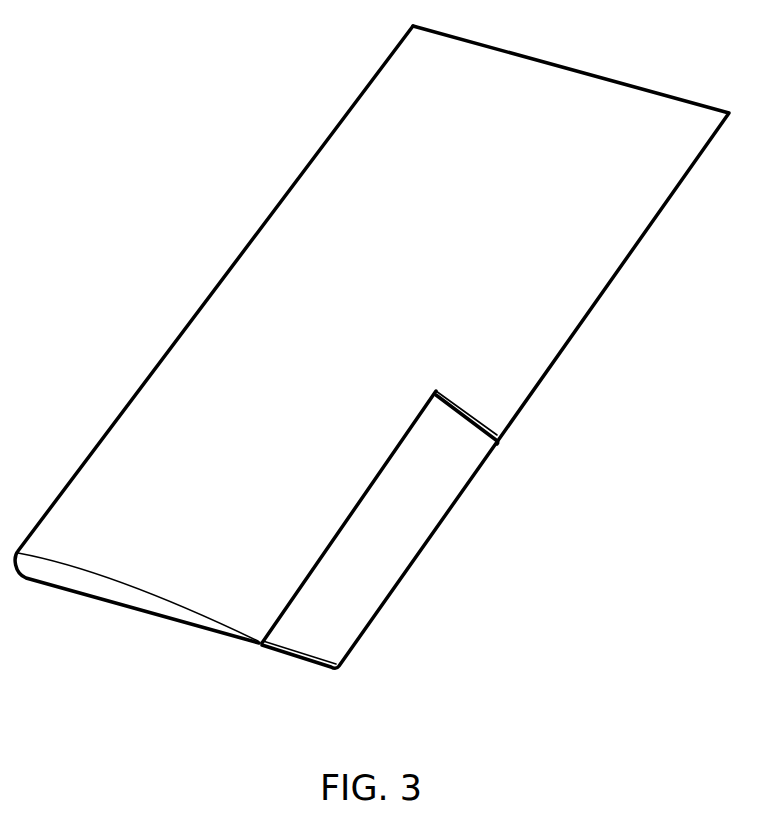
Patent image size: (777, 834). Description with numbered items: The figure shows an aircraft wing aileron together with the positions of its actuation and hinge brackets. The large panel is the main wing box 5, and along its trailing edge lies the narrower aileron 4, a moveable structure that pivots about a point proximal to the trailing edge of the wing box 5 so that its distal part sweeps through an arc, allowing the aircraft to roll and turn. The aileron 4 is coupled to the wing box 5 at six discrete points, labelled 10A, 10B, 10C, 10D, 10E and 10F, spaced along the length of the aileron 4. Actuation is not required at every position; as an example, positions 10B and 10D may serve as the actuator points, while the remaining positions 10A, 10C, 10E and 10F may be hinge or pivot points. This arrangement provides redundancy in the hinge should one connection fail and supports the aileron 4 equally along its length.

The wing box 5 is at (176, 384).
The aileron 4 is at (435, 520).
The discrete point 10A is at (261, 618).
The discrete point 10B is at (285, 582).
The discrete point 10C is at (314, 542).
The discrete point 10D is at (342, 496).
The discrete point 10E is at (393, 436).
The discrete point 10F is at (412, 408).